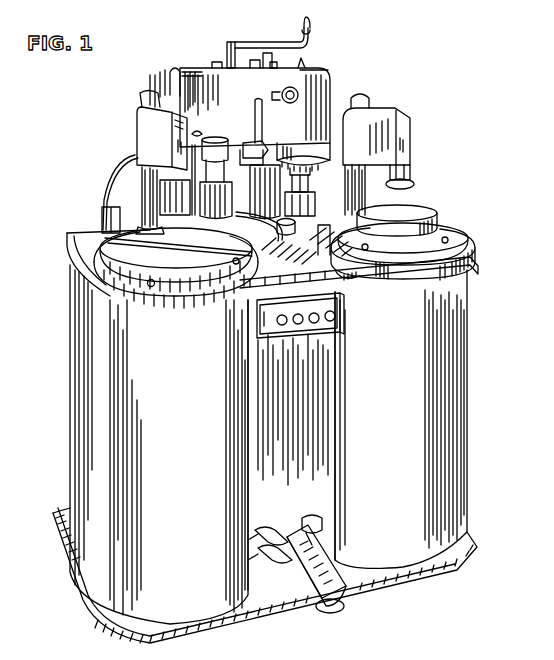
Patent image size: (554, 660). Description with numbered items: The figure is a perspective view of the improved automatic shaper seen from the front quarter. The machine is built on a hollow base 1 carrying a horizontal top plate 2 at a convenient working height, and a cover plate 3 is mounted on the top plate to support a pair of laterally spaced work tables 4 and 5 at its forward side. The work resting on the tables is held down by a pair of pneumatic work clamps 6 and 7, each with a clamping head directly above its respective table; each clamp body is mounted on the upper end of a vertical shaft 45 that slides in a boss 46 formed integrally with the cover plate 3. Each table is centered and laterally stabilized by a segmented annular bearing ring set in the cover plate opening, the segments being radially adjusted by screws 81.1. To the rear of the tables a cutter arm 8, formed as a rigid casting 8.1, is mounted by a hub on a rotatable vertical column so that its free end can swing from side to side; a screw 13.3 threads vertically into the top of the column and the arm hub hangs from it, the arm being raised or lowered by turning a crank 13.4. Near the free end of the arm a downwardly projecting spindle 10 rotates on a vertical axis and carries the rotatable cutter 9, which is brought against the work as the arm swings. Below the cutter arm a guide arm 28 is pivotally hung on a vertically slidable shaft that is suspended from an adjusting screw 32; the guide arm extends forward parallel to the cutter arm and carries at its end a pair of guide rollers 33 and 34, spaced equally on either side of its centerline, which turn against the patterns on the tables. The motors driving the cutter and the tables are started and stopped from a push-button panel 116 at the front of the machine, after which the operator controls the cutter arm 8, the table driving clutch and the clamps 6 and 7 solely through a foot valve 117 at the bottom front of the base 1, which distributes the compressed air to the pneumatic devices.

The hollow base 1 is at (466, 407).
The horizontal top plate 2 is at (82, 250).
The cover plate 3 is at (354, 278).
The work table 4 is at (102, 283).
The work table 5 is at (456, 221).
The work clamp 6 is at (165, 147).
The work clamp 7 is at (408, 128).
The cutter arm 8 is at (323, 80).
The rigid casting 8.1 is at (219, 146).
The rotatable cutter 9 is at (313, 206).
The spindle 10 is at (306, 175).
The screw 13.3 is at (228, 43).
The crank 13.4 is at (262, 42).
The adjusting screw 32 is at (273, 65).
The guide arm 28 is at (272, 238).
The roller 33 is at (303, 244).
The roller 34 is at (334, 244).
The vertical shaft 45 is at (146, 190).
The boss 46 is at (143, 228).
The screws 81.1 is at (153, 287).
The panel 116 is at (341, 330).
The foot valve 117 is at (302, 556).